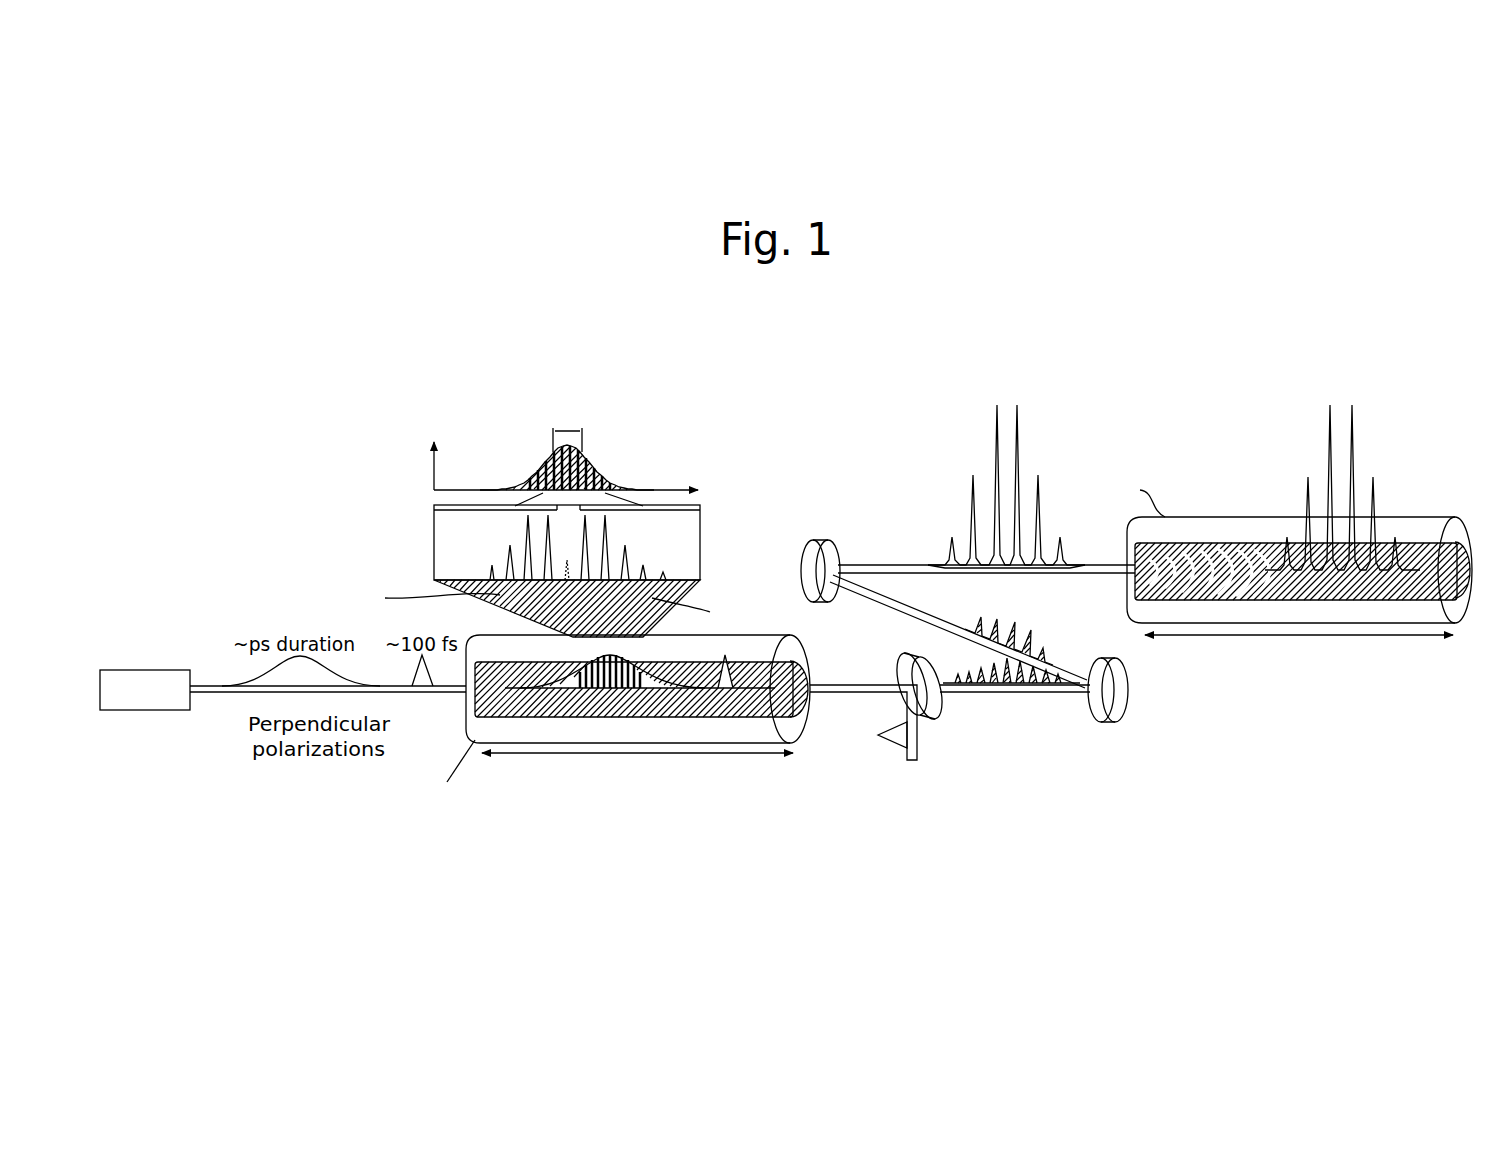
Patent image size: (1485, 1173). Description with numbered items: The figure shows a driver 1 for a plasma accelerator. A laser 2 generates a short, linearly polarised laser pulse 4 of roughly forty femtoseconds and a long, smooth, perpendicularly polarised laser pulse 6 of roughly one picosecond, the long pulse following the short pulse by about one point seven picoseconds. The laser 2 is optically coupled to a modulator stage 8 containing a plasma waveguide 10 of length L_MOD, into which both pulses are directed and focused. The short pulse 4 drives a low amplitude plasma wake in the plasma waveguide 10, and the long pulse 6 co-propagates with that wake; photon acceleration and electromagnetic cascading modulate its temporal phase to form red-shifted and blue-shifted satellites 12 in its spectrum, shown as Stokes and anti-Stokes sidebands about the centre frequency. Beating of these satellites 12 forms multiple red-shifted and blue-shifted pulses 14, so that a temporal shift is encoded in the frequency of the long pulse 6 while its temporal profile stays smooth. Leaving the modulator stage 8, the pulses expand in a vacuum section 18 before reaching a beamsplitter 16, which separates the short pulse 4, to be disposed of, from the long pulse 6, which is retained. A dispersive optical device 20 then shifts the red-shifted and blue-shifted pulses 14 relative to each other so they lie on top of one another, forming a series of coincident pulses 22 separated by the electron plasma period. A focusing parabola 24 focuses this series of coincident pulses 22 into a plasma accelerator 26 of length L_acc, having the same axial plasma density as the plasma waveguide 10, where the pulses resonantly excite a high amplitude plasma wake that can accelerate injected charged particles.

The driver 1 is at (243, 385).
The laser 2 is at (130, 668).
The short laser pulse 4 is at (426, 690).
The long laser pulse 6 is at (248, 686).
The modulator stage 8 is at (753, 742).
The plasma waveguide 10 is at (520, 712).
The satellites 12 is at (440, 578).
The red-shifted and blue-shifted pulses 14 is at (613, 468).
The beamsplitter 16 is at (928, 712).
The vacuum section 18 is at (843, 694).
The dispersive optical device 20 is at (1124, 693).
The series of coincident pulses 22 is at (1040, 628).
The focusing parabola 24 is at (806, 556).
The plasma accelerator 26 is at (1225, 527).